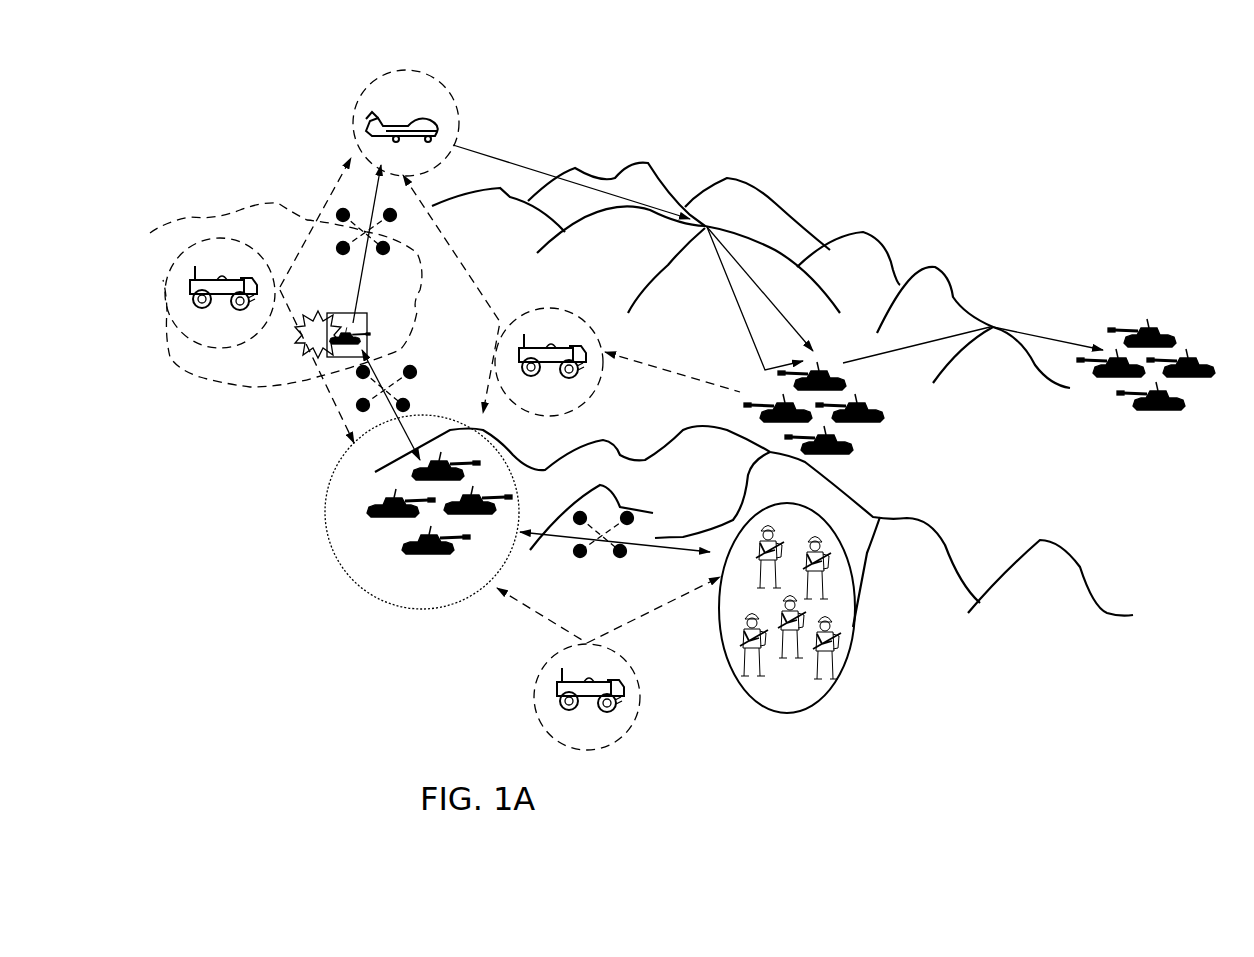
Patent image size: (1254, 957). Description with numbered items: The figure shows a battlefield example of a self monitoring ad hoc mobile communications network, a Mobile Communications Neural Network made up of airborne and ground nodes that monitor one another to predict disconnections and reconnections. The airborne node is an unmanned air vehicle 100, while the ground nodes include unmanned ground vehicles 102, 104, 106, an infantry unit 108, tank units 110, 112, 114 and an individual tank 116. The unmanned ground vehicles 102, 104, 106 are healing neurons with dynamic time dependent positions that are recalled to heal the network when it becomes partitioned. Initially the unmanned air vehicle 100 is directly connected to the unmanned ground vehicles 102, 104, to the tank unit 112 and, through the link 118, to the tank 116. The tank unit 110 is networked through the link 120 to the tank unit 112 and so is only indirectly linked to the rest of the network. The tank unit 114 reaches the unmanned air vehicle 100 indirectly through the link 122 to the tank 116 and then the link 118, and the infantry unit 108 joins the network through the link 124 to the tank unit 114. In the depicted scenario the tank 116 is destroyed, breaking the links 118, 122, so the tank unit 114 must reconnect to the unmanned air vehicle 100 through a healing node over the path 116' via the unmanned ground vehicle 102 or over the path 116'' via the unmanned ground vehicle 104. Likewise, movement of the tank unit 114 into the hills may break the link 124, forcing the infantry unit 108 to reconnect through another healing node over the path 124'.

The unmanned air vehicle 100 is at (376, 82).
The unmanned ground vehicle 102 is at (551, 307).
The unmanned ground vehicle 104 is at (225, 242).
The unmanned ground vehicle 106 is at (535, 690).
The infantry unit 108 is at (850, 668).
The tank unit 110 is at (1130, 420).
The tank unit 112 is at (893, 452).
The tank unit 114 is at (330, 543).
The individual tank 116 is at (409, 288).
The path 116' is at (405, 285).
The path 116'' is at (288, 366).
The link 118 is at (366, 313).
The link 120 is at (950, 283).
The link 122 is at (407, 428).
The link 124 is at (624, 523).
The path 124' is at (667, 649).